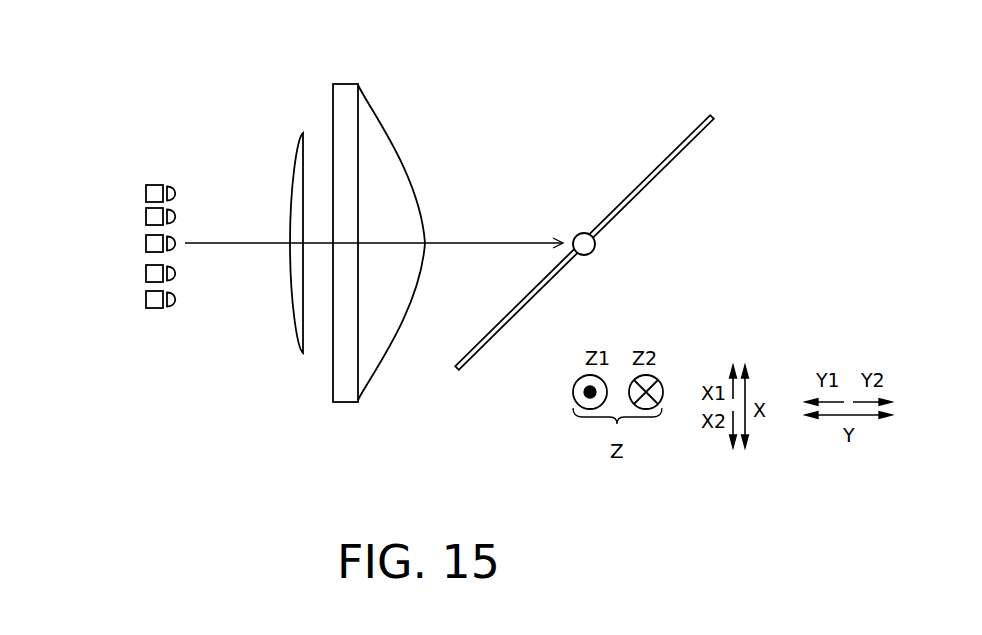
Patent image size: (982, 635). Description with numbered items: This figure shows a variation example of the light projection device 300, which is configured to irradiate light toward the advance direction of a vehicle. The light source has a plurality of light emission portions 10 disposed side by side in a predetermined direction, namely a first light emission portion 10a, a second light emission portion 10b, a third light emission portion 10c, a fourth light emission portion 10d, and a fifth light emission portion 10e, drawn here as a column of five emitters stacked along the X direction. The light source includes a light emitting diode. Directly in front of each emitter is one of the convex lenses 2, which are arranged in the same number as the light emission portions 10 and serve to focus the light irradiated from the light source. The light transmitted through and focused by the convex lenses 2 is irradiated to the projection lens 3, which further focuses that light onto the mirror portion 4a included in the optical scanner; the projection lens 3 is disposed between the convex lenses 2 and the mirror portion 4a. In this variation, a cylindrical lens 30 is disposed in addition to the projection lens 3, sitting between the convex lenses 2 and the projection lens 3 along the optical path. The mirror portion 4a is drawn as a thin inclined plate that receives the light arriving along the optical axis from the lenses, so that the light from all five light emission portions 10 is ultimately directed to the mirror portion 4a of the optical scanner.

The light projection device 300 is at (128, 43).
The light emission portions 10 is at (151, 163).
The first light emission portion 10a is at (132, 192).
The second light emission portion 10b is at (132, 215).
The third light emission portion 10c is at (132, 243).
The fourth light emission portion 10d is at (132, 273).
The fifth light emission portion 10e is at (132, 299).
The convex lenses 2 is at (193, 181).
The projection lens 3 is at (300, 101).
The cylindrical lens 30 is at (272, 328).
The mirror portion 4a is at (703, 159).